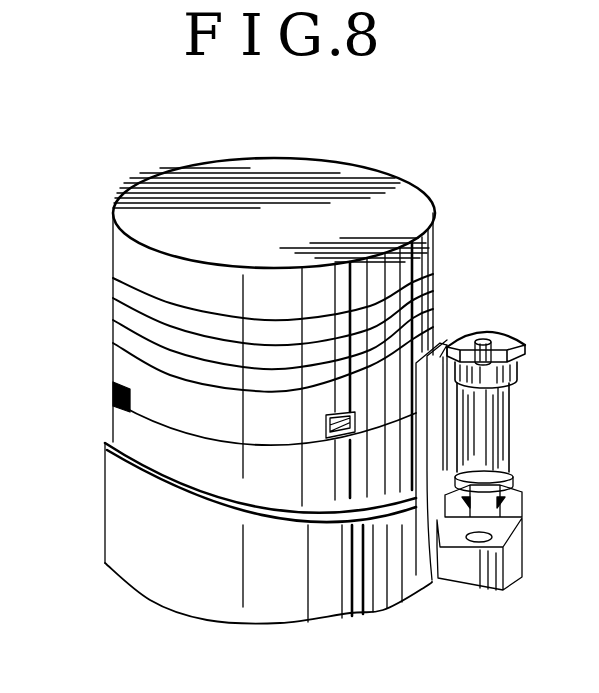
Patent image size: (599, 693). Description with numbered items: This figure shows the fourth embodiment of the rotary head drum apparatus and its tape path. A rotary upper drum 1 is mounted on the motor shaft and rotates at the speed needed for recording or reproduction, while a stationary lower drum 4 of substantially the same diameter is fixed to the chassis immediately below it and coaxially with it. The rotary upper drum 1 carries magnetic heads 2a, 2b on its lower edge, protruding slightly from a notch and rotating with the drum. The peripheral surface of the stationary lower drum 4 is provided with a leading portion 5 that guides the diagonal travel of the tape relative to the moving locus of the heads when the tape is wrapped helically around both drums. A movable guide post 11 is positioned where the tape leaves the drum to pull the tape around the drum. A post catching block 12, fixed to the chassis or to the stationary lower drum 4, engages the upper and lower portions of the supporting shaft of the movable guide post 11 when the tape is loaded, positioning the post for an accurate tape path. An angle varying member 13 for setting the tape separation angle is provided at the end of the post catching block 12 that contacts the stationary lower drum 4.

The rotary upper drum 1 is at (412, 196).
The magnetic head 2a is at (113, 393).
The magnetic head 2b is at (326, 440).
The stationary lower drum 4 is at (130, 432).
The leading portion 5 is at (150, 540).
The movable guide post 11 is at (503, 433).
The post catching block 12 is at (511, 325).
The angle varying member 13 is at (430, 580).